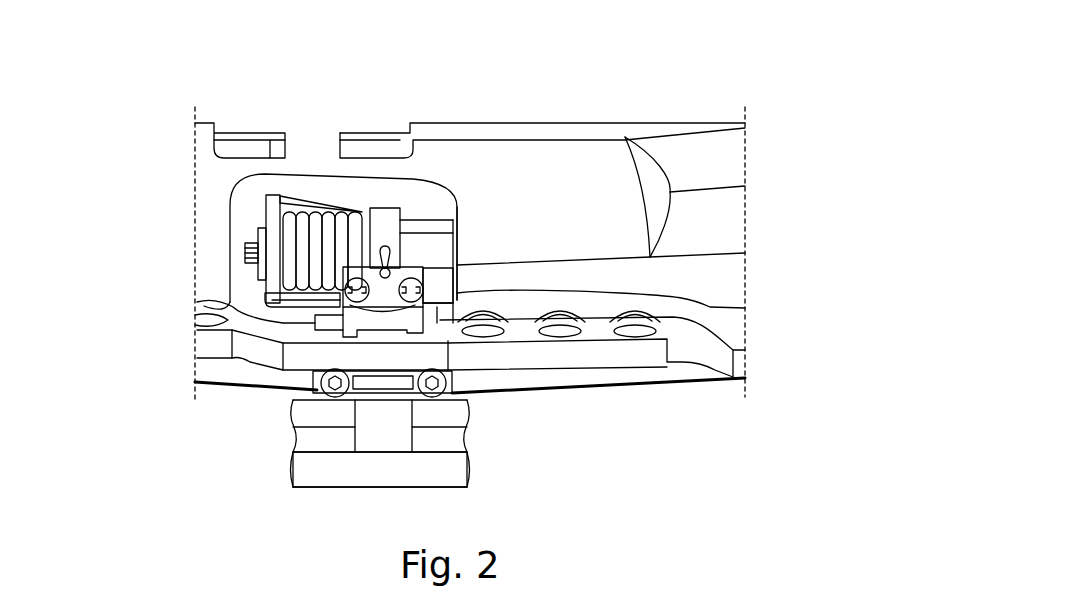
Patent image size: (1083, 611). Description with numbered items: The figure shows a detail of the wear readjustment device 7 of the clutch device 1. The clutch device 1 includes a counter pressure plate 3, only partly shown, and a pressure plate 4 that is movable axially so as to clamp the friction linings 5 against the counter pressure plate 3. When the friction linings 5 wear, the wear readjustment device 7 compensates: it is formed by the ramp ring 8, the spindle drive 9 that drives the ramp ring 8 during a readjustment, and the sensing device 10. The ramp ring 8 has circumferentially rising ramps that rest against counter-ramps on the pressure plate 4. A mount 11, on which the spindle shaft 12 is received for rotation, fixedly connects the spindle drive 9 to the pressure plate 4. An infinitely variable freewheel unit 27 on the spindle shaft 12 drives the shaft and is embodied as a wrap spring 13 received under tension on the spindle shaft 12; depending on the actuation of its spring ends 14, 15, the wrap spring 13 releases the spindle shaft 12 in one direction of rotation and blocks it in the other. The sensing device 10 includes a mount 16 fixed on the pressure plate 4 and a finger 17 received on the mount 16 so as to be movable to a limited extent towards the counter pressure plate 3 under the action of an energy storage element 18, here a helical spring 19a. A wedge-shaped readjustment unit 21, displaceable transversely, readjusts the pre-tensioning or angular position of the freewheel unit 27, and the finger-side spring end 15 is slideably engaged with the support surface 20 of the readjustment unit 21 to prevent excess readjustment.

The clutch device 1 is at (567, 68).
The counter pressure plate 3 is at (423, 463).
The pressure plate 4 is at (240, 378).
The friction linings 5 is at (470, 405).
The wear readjustment device 7 is at (440, 206).
The ramp ring 8 is at (403, 265).
The spindle drive 9 is at (315, 199).
The sensing device 10 is at (352, 426).
The mount 11 is at (262, 303).
The spindle shaft 12 is at (258, 246).
The wrap spring 13 is at (328, 225).
The spring end 14 is at (278, 205).
The finger-side spring end 15 is at (422, 270).
The mount 16 is at (297, 403).
The finger 17 is at (380, 440).
The energy storage element 18 is at (418, 318).
The helical spring 19a is at (412, 302).
The support surface 20 is at (414, 236).
The readjustment unit 21 is at (457, 293).
The infinitely variable freewheel unit 27 is at (258, 213).